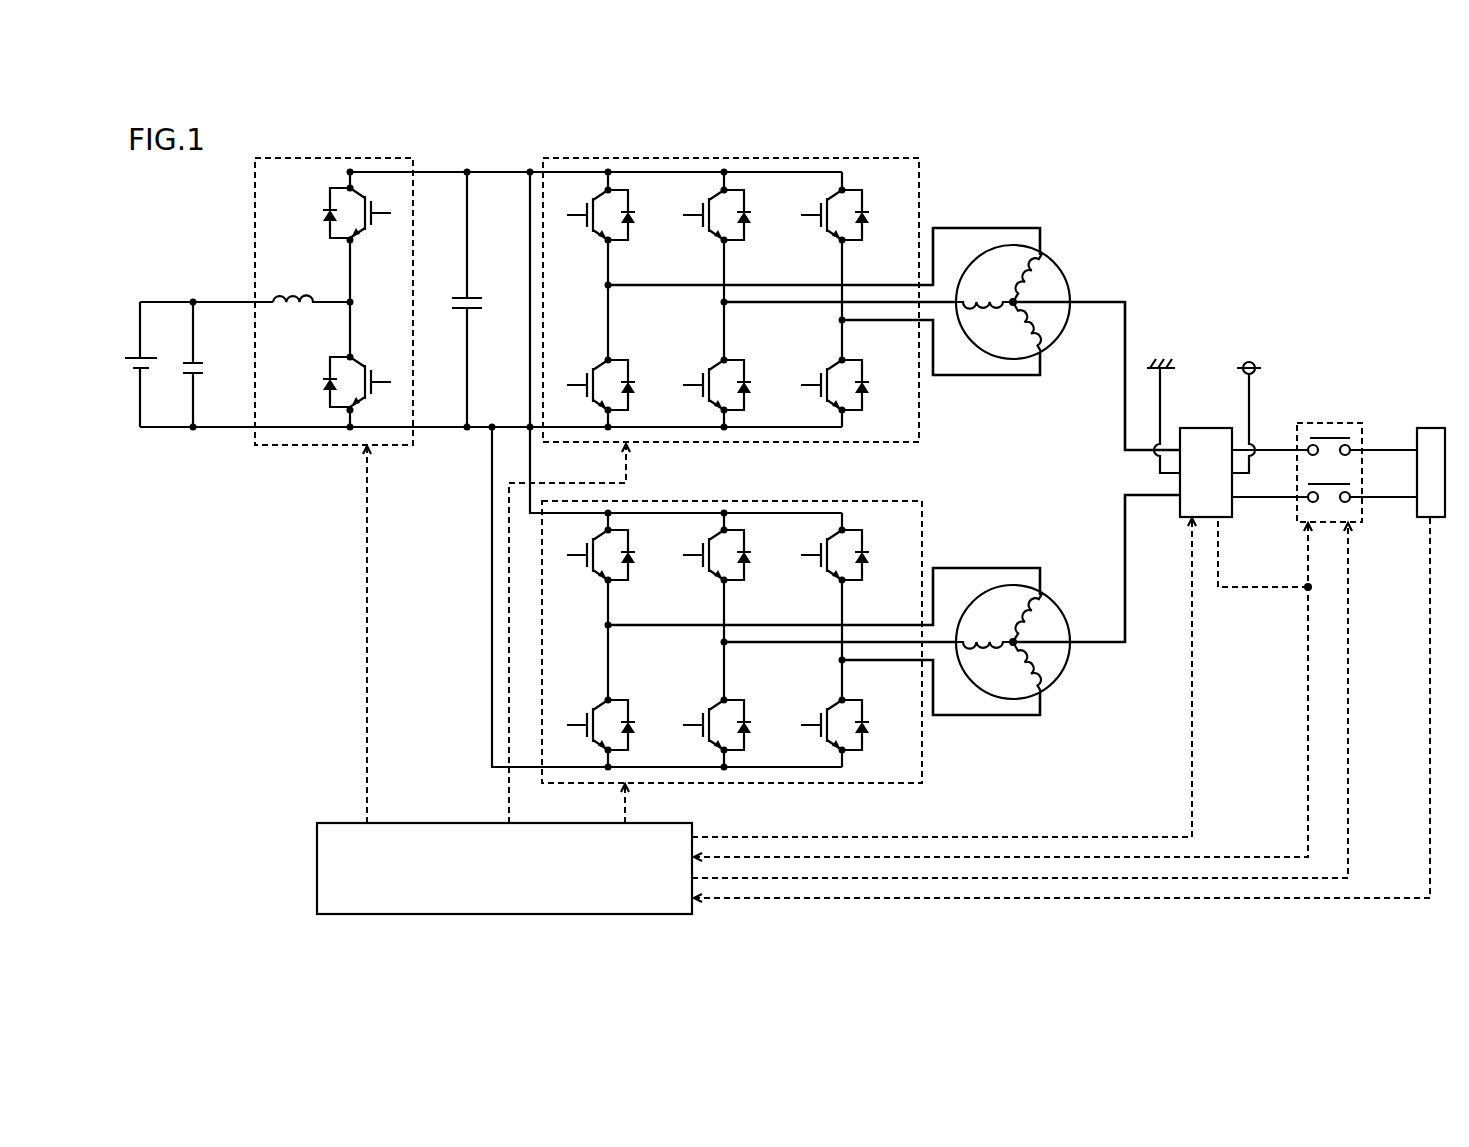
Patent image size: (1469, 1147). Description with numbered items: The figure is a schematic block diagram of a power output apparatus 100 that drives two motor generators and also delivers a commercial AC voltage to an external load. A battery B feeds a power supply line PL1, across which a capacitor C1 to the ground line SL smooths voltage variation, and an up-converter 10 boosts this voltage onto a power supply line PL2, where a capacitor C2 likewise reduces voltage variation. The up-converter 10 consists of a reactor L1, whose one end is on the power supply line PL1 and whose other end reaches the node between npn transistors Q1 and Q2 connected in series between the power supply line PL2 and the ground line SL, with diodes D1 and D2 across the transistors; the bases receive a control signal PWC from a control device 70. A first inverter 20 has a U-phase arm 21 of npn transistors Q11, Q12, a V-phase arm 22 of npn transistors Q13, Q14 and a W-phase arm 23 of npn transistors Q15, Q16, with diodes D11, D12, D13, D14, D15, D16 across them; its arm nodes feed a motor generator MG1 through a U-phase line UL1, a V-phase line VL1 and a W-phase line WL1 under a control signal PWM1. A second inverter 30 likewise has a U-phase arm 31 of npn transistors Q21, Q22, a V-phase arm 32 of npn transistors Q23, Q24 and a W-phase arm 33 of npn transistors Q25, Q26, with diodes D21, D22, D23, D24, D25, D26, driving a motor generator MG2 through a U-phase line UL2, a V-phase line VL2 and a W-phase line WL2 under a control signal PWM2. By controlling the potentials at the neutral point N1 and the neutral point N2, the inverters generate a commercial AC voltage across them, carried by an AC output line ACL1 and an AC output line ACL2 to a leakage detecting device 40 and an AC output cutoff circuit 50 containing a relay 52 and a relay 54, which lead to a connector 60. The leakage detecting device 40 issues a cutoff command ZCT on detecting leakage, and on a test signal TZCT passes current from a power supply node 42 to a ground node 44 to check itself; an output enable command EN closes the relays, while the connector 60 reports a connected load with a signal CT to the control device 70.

The power output apparatus 100 is at (1151, 175).
The up-converter 10 is at (334, 319).
The inverter 20 is at (724, 317).
The inverter 30 is at (732, 660).
The U-phase arm 21 is at (601, 295).
The V-phase arm 22 is at (717, 314).
The W-phase arm 23 is at (833, 333).
The U-phase arm 31 is at (601, 635).
The V-phase arm 32 is at (717, 654).
The W-phase arm 33 is at (833, 673).
The leakage detecting device 40 is at (1204, 427).
The power supply node 42 is at (1251, 361).
The ground node 44 is at (1161, 357).
The AC output cutoff circuit 50 is at (1343, 471).
The relay 52 is at (1312, 436).
The relay 54 is at (1340, 468).
The connector 60 is at (1430, 427).
The control device 70 is at (332, 822).
The battery B is at (145, 358).
The capacitor C1 is at (200, 362).
The capacitor C2 is at (478, 300).
The reactor L1 is at (311, 284).
The npn transistor Q1 is at (372, 224).
The npn transistor Q2 is at (373, 379).
The diode D1 is at (320, 213).
The diode D2 is at (320, 382).
The power supply line PL1 is at (229, 301).
The power supply line PL2 is at (500, 171).
The ground line SL is at (448, 430).
The npn transistor Q11 is at (585, 227).
The npn transistor Q12 is at (585, 373).
The npn transistor Q13 is at (701, 227).
The npn transistor Q14 is at (701, 373).
The npn transistor Q15 is at (819, 227).
The npn transistor Q16 is at (819, 373).
The diode D11 is at (645, 215).
The diode D12 is at (645, 385).
The diode D13 is at (768, 215).
The diode D14 is at (768, 385).
The diode D15 is at (879, 215).
The diode D16 is at (879, 385).
The npn transistor Q21 is at (585, 567).
The npn transistor Q22 is at (585, 713).
The npn transistor Q23 is at (701, 567).
The npn transistor Q24 is at (701, 713).
The npn transistor Q25 is at (819, 567).
The npn transistor Q26 is at (819, 713).
The diode D21 is at (645, 555).
The diode D22 is at (645, 725).
The diode D23 is at (768, 555).
The diode D24 is at (768, 725).
The diode D25 is at (879, 555).
The diode D26 is at (879, 725).
The motor generator MG1 is at (1054, 342).
The motor generator MG2 is at (1053, 600).
The neutral point N1 is at (1008, 308).
The neutral point N2 is at (1008, 648).
The U-phase line UL1 is at (1012, 227).
The V-phase line VL1 is at (945, 300).
The W-phase line WL1 is at (1016, 377).
The U-phase line UL2 is at (1012, 567).
The V-phase line VL2 is at (945, 640).
The W-phase line WL2 is at (1016, 717).
The AC output line ACL1 is at (1110, 300).
The AC output line ACL2 is at (1110, 646).
The control signal PWC is at (391, 634).
The control signal PWM1 is at (619, 633).
The control signal PWM2 is at (706, 803).
The cutoff command ZCT is at (1003, 689).
The test signal TZCT is at (944, 677).
The output enable command EN is at (1038, 700).
The signal CT is at (1062, 723).